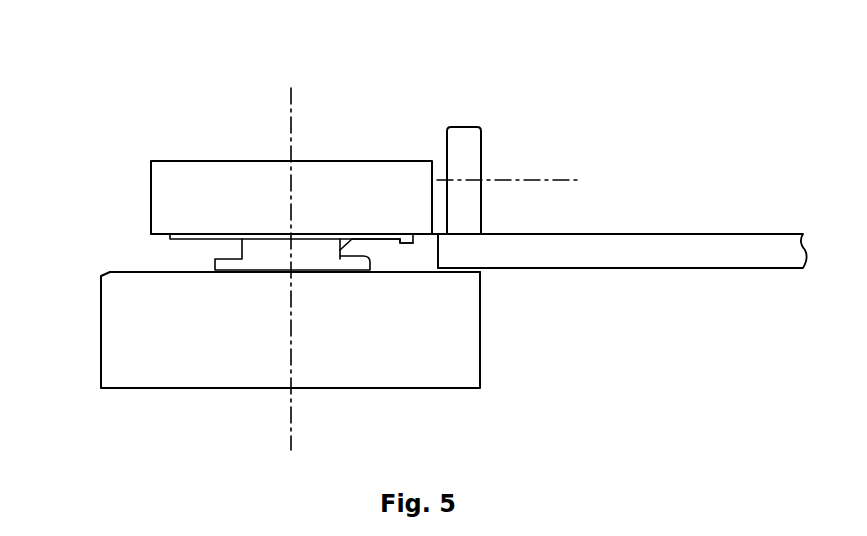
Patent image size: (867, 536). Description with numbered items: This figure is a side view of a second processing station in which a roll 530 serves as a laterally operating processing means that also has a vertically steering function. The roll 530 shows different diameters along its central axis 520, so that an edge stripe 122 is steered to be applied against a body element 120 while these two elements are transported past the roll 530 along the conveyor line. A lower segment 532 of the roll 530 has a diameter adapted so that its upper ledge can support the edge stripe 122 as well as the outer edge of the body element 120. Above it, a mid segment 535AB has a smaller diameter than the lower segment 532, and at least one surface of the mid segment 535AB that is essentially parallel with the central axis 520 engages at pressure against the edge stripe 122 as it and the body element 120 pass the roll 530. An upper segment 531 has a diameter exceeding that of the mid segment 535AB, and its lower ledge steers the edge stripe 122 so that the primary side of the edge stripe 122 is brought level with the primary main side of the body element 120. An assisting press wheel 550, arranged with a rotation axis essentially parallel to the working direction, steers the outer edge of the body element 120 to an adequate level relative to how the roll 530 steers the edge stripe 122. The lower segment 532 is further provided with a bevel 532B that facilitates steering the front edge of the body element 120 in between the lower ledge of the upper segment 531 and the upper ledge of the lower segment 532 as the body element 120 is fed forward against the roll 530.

The body element 120 is at (655, 248).
The edge stripe 122 is at (385, 253).
The central axis 520 is at (291, 414).
The roll 530 is at (188, 139).
The upper segment 531 is at (168, 205).
The lower segment 532 is at (445, 348).
The bevel 532B is at (466, 272).
The mid segment 535AB is at (242, 250).
The assisting press wheel 550 is at (463, 160).